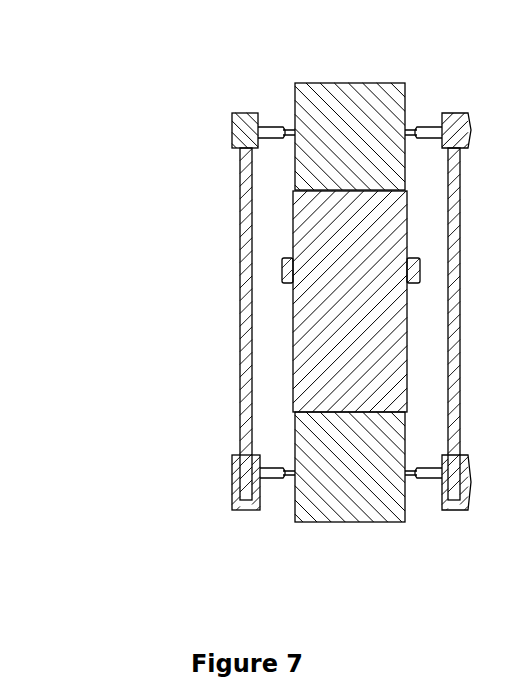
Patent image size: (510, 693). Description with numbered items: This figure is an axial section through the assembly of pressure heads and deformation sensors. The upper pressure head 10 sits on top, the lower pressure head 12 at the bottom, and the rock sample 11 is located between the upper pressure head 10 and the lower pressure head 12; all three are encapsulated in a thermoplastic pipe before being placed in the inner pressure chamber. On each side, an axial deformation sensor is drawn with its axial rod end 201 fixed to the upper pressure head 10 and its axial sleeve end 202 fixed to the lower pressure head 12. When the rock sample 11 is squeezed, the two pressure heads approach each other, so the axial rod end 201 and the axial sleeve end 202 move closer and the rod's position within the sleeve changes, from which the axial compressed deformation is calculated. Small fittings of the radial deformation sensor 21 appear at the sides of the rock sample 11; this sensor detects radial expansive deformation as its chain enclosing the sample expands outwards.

The upper pressure head 10 is at (330, 100).
The rock sample 11 is at (330, 232).
The lower pressure head 12 is at (330, 510).
The radial deformation sensor 21 is at (284, 272).
The axial rod end 201 is at (234, 130).
The axial sleeve end 202 is at (234, 476).